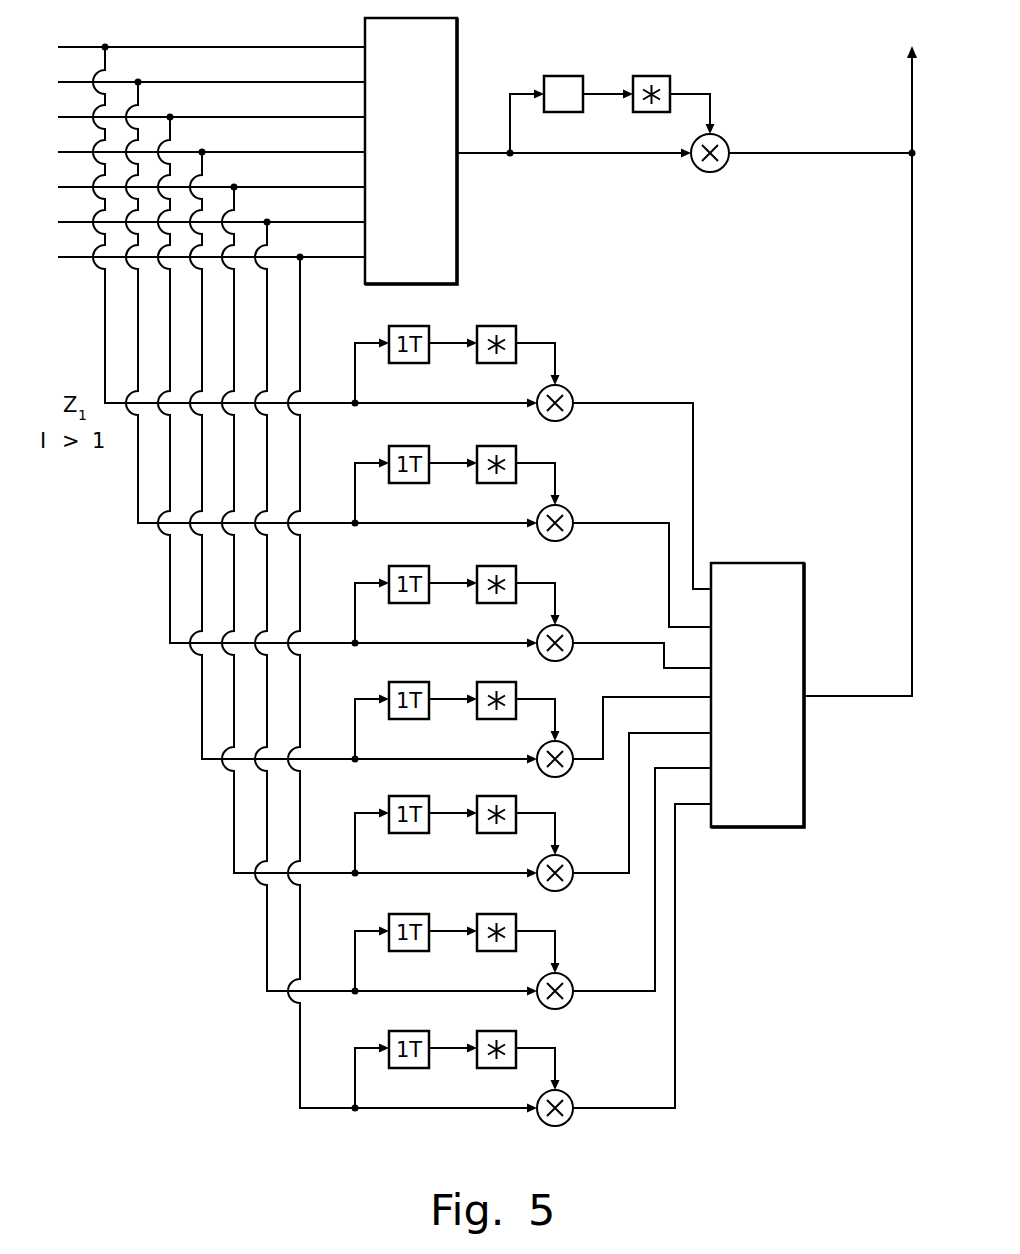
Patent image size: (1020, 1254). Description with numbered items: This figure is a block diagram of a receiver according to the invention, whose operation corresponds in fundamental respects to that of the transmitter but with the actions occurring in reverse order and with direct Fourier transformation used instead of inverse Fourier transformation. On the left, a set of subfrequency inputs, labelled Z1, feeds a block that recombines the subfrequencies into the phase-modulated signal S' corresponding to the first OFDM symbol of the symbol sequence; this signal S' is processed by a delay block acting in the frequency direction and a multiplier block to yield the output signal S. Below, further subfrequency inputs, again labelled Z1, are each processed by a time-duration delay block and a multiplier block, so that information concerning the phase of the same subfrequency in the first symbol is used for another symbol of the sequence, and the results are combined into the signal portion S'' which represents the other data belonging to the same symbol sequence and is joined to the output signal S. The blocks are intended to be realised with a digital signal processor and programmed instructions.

The transformation unit / set of input signals Z1 is at (391, 151).
The phase-modulated signal S' is at (593, 124).
The signal portion S'' is at (777, 695).
The signal S is at (823, 356).